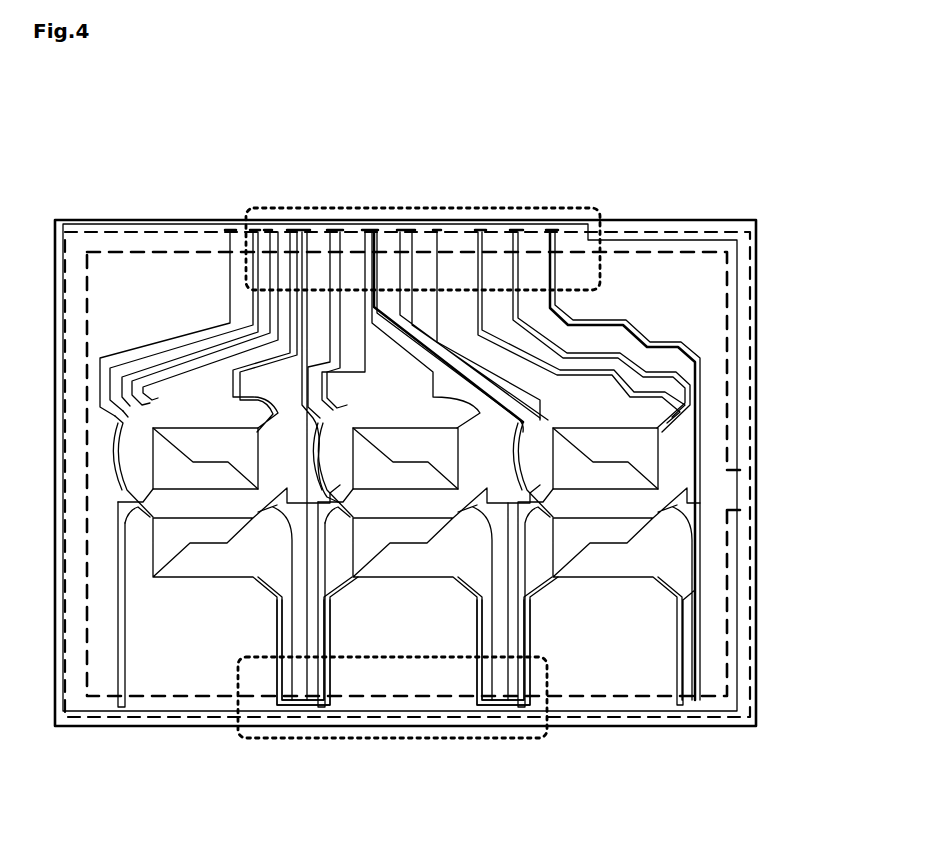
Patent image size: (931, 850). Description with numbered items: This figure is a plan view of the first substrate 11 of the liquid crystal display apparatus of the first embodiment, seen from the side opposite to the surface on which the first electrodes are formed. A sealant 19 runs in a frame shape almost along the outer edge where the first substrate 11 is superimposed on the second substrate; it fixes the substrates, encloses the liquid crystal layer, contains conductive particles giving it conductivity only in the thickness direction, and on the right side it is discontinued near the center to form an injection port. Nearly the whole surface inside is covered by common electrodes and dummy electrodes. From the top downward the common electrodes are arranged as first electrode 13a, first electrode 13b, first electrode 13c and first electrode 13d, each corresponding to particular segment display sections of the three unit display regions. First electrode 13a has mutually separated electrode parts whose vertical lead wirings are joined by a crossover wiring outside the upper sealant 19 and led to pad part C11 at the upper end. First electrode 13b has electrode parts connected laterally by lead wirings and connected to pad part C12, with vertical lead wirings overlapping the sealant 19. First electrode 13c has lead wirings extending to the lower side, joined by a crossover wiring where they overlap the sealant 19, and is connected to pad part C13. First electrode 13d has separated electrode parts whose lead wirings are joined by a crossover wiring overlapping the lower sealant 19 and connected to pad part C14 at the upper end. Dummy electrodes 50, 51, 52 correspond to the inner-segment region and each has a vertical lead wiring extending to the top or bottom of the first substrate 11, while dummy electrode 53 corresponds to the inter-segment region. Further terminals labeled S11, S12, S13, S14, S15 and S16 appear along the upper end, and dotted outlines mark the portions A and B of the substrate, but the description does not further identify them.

The first substrate 11 is at (705, 222).
The sealant 19 is at (632, 245).
The first electrode 13a is at (178, 418).
The first electrode 13b is at (180, 505).
The first electrode 13c is at (140, 533).
The first electrode 13d is at (203, 583).
The dummy electrode 50 is at (638, 449).
The dummy electrode 51 is at (618, 477).
The dummy electrode 52 is at (617, 532).
The dummy electrode 53 is at (307, 687).
The signal line S11 is at (238, 247).
The signal line S12 is at (268, 248).
The signal line S13 is at (310, 250).
The signal line S14 is at (350, 250).
The signal line S15 is at (383, 250).
The signal line S16 is at (420, 250).
The pad part C11 is at (457, 250).
The pad part C12 is at (497, 250).
The pad part C13 is at (530, 250).
The pad part C14 is at (573, 250).
The region A is at (603, 268).
The region B is at (548, 675).